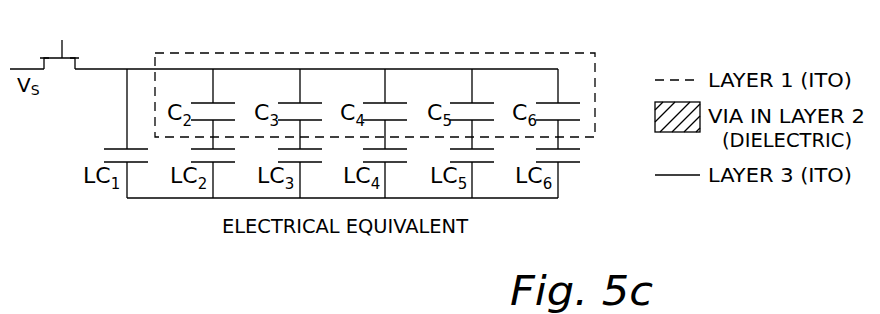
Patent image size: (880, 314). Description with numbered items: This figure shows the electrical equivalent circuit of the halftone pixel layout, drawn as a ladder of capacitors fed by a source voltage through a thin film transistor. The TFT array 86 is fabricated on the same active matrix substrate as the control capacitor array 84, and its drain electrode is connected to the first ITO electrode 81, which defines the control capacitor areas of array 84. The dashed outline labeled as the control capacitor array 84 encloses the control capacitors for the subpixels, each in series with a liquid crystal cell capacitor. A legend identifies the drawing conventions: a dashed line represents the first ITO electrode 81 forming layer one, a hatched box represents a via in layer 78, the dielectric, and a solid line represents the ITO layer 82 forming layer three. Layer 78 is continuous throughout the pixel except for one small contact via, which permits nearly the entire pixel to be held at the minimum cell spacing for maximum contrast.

The TFT array 86 is at (73, 58).
The control capacitor array 84 is at (538, 51).
The first ITO electrode 81 is at (681, 78).
The layer 78 is at (668, 132).
The ITO layer 82 is at (674, 176).